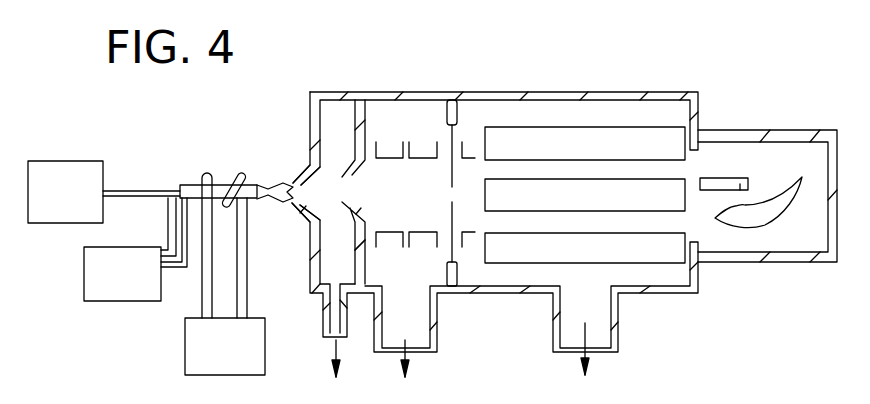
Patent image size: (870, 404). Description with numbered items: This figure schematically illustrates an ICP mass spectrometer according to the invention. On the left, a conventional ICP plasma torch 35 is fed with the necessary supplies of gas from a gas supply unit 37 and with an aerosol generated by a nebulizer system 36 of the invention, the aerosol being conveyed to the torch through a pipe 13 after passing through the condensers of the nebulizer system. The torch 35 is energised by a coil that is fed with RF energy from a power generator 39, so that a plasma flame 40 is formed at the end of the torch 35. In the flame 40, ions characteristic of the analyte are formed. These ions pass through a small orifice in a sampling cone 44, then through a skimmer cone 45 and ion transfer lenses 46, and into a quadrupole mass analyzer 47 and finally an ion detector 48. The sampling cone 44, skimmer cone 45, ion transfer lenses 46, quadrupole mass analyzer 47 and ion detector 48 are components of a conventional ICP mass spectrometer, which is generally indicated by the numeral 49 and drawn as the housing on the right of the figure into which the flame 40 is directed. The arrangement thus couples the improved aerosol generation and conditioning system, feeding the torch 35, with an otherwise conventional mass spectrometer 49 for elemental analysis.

The pipe 13 is at (157, 188).
The ICP plasma torch 35 is at (190, 185).
The nebulizer system 36 is at (72, 199).
The gas supply unit 37 is at (136, 286).
The power generator 39 is at (235, 354).
The plasma flame 40 is at (268, 186).
The sampling cone 44 is at (303, 218).
The skimmer cone 45 is at (350, 218).
The ion transfer lenses 46 is at (389, 238).
The quadrupole mass analyzer 47 is at (630, 247).
The ion detector 48 is at (745, 217).
The ICP mass spectrometer 49 is at (480, 91).